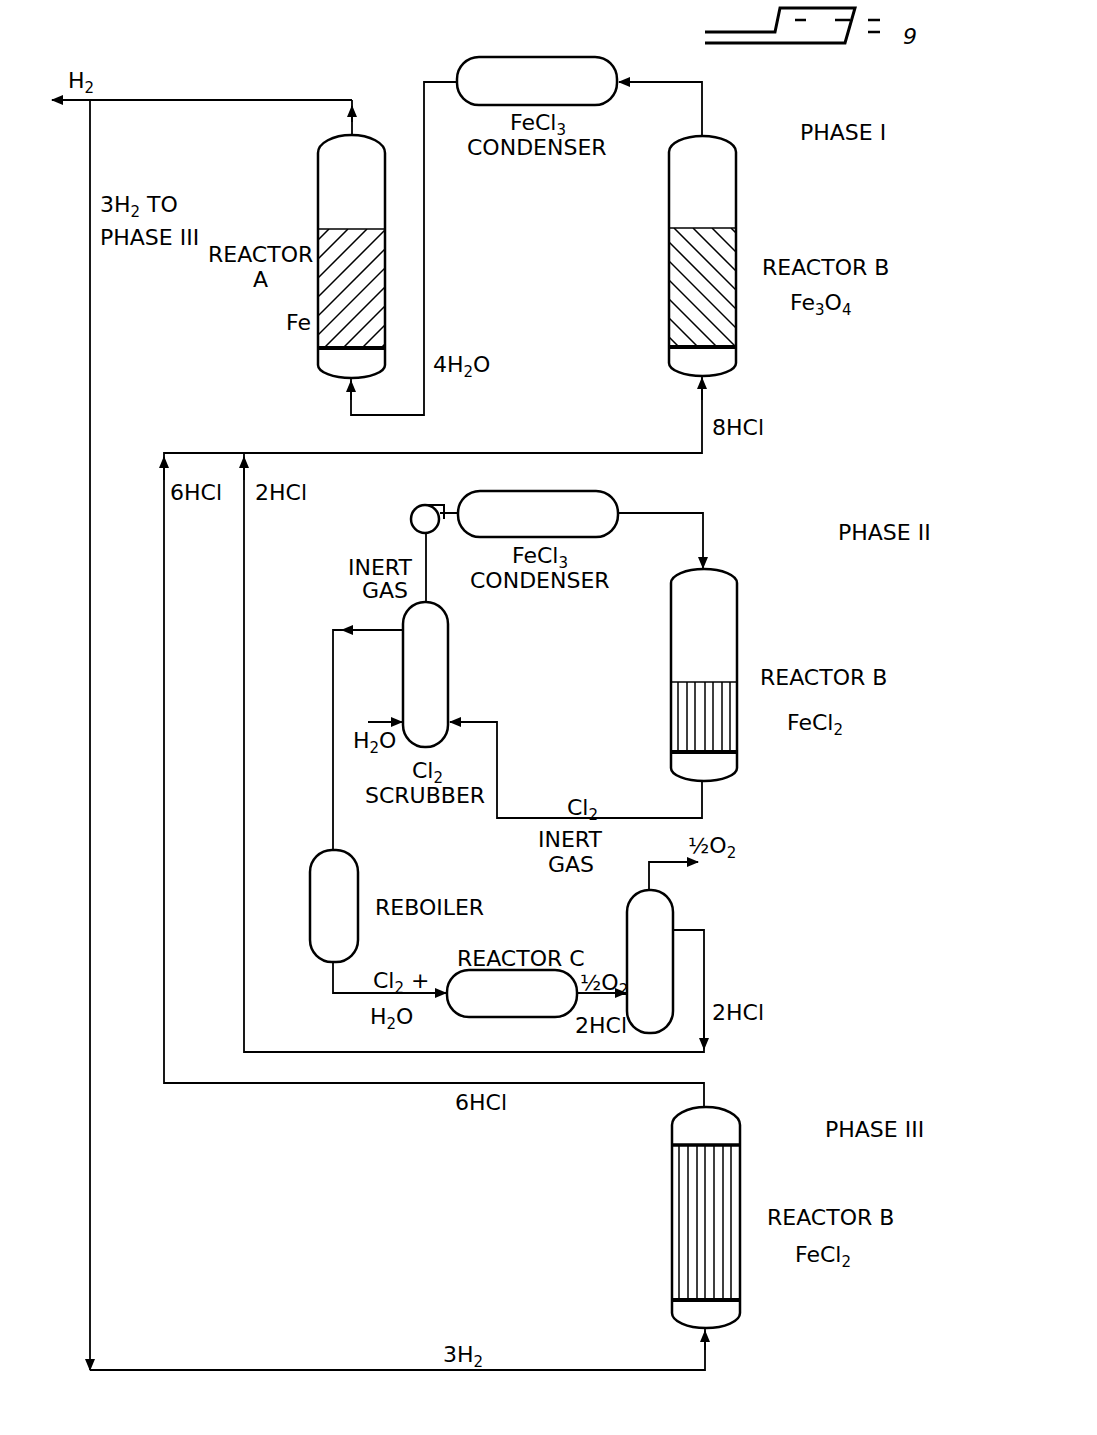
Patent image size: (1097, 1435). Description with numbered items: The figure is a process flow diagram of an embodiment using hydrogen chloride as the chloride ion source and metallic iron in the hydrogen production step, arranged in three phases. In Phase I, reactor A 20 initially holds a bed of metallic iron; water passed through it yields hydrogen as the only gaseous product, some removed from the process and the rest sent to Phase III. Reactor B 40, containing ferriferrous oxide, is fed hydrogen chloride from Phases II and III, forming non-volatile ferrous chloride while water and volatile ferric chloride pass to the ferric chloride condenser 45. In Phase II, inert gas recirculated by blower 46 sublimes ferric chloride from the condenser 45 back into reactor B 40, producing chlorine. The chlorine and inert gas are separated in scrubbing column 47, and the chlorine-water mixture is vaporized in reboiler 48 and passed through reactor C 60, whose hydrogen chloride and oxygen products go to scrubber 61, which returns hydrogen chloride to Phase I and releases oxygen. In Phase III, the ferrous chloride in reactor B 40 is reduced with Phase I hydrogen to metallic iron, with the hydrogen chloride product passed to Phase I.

The reactor A 20 is at (318, 367).
The reactor B 40 is at (737, 362).
The ferric chloride condenser 45 is at (611, 60).
The blower 46 is at (416, 509).
The scrubbing column 47 is at (450, 640).
The reboiler 48 is at (357, 868).
The reactor C 60 is at (455, 1019).
The scrubber 61 is at (674, 913).